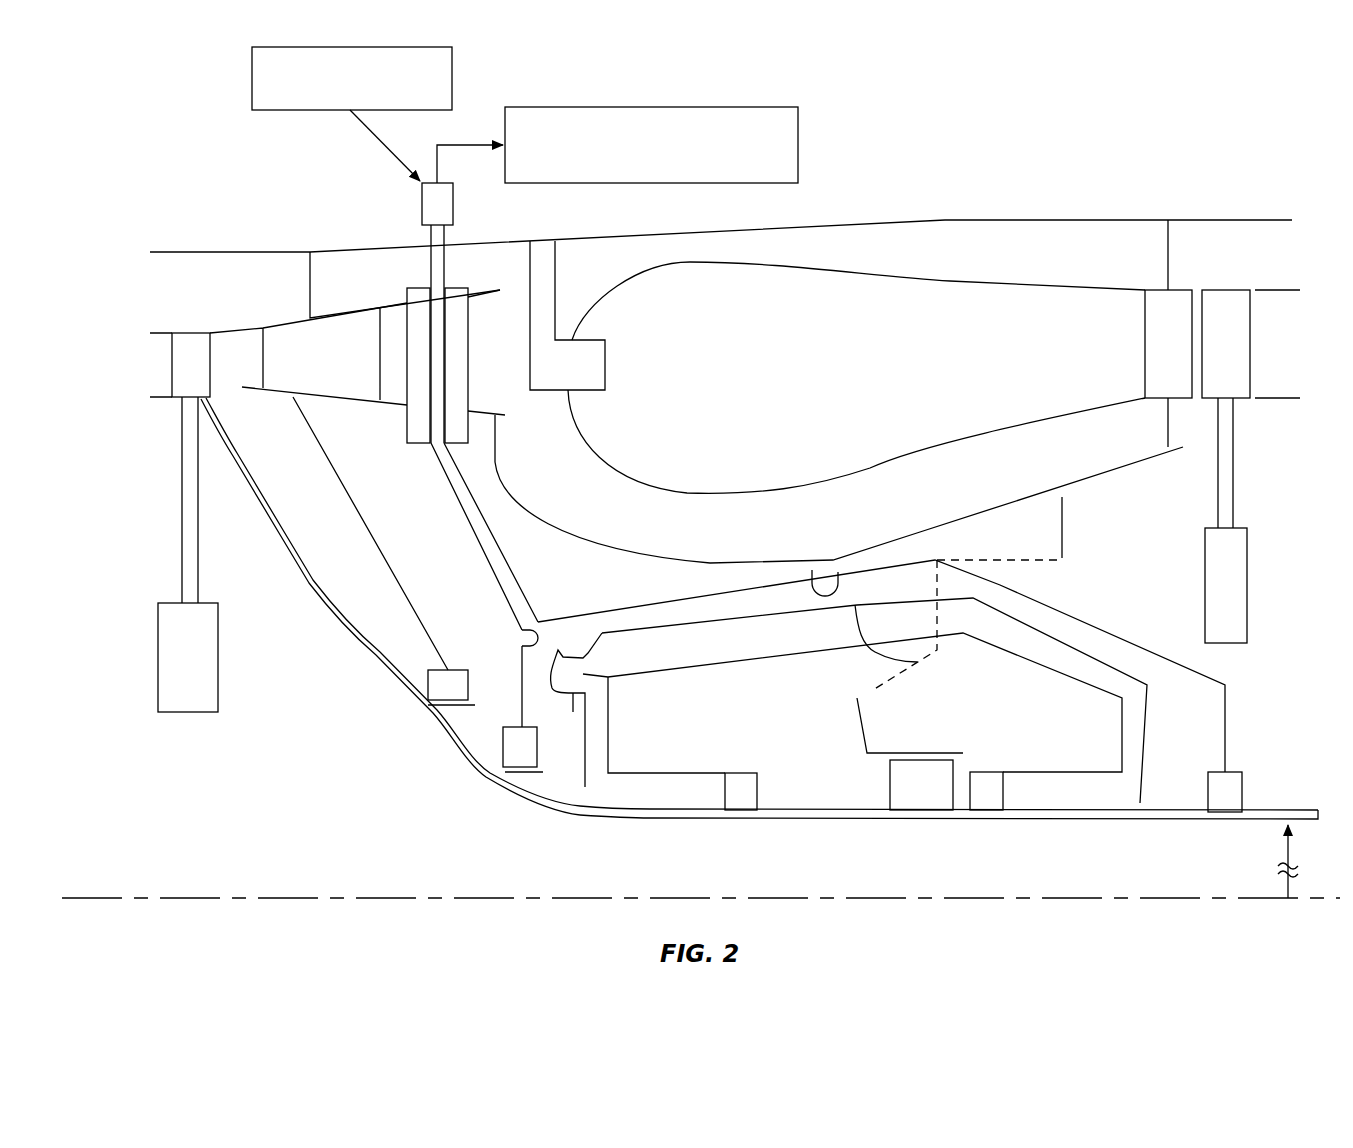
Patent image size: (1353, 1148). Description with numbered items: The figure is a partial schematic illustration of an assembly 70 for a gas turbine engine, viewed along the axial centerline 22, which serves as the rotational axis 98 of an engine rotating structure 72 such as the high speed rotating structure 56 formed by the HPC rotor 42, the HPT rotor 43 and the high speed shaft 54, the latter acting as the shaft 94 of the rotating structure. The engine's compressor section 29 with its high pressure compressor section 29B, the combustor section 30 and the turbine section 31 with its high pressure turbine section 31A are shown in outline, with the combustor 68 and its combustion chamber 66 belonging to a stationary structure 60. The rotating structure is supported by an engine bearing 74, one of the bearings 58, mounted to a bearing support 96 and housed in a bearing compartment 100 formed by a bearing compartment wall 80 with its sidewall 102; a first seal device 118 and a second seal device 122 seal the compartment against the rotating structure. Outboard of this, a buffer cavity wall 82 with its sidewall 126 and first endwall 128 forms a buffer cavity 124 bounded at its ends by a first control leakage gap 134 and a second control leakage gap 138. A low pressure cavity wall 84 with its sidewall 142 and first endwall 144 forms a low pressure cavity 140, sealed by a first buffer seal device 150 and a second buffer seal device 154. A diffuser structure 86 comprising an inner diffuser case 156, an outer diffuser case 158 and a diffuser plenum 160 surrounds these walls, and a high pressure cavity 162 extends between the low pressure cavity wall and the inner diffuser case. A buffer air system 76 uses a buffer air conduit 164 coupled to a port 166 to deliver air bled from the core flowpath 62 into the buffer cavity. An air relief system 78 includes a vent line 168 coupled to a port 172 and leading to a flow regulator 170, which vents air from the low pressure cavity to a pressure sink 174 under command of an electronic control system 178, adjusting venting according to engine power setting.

The axial centerline 22 is at (697, 849).
The rotational axis 98 is at (77, 895).
The compressor section 29 is at (335, 230).
The high pressure compressor section 29B is at (225, 228).
The combustor section 30 is at (945, 212).
The turbine section 31 is at (1222, 307).
The high pressure turbine section 31A is at (1258, 243).
The HPC rotor 42 is at (182, 718).
The HPT rotor 43 is at (1258, 618).
The high speed shaft 54 is at (949, 850).
The shaft 94 is at (835, 820).
The high speed rotating structure 56 is at (390, 606).
The engine rotating structure 72 is at (380, 678).
The bearings 58 is at (929, 827).
The engine bearing 74 is at (920, 813).
The stationary structure 60 is at (1292, 218).
The core flowpath 62 is at (150, 365).
The combustion chamber 66 is at (866, 387).
The combustor 68 is at (1000, 283).
The assembly 70 is at (1232, 110).
The buffer air system 76 is at (572, 648).
The air relief system 78 is at (470, 535).
The bearing compartment wall 80 is at (793, 663).
The buffer cavity wall 82 is at (1080, 650).
The low pressure cavity wall 84 is at (1143, 640).
The diffuser structure 86 is at (1117, 482).
The bearing support 96 is at (873, 690).
The bearing compartment 100 is at (746, 735).
The bearing compartment sidewall 102 is at (833, 650).
The bearing compartment first seal device 118 is at (757, 793).
The bearing compartment second seal device 122 is at (1003, 790).
The buffer cavity 124 is at (718, 657).
The buffer cavity sidewall 126 is at (917, 662).
The buffer cavity first endwall 128 is at (587, 730).
The first control leakage gap 134 is at (583, 793).
The second control leakage gap 138 is at (1145, 808).
The low pressure cavity 140 is at (738, 602).
The low pressure cavity sidewall 142 is at (812, 598).
The low pressure cavity first endwall 144 is at (513, 705).
The first buffer seal device 150 is at (503, 750).
The second buffer seal device 154 is at (1242, 790).
The inner diffuser case 156 is at (965, 520).
The outer diffuser case 158 is at (1092, 218).
The diffuser plenum 160 is at (911, 270).
The high pressure cavity 162 is at (441, 545).
The buffer air conduit 164 is at (572, 698).
The port 166 is at (610, 677).
The vent line 168 is at (447, 487).
The flow regulator 170 is at (422, 200).
The port 172 is at (520, 650).
The pressure sink 174 is at (798, 150).
The electronic control system 178 is at (452, 77).